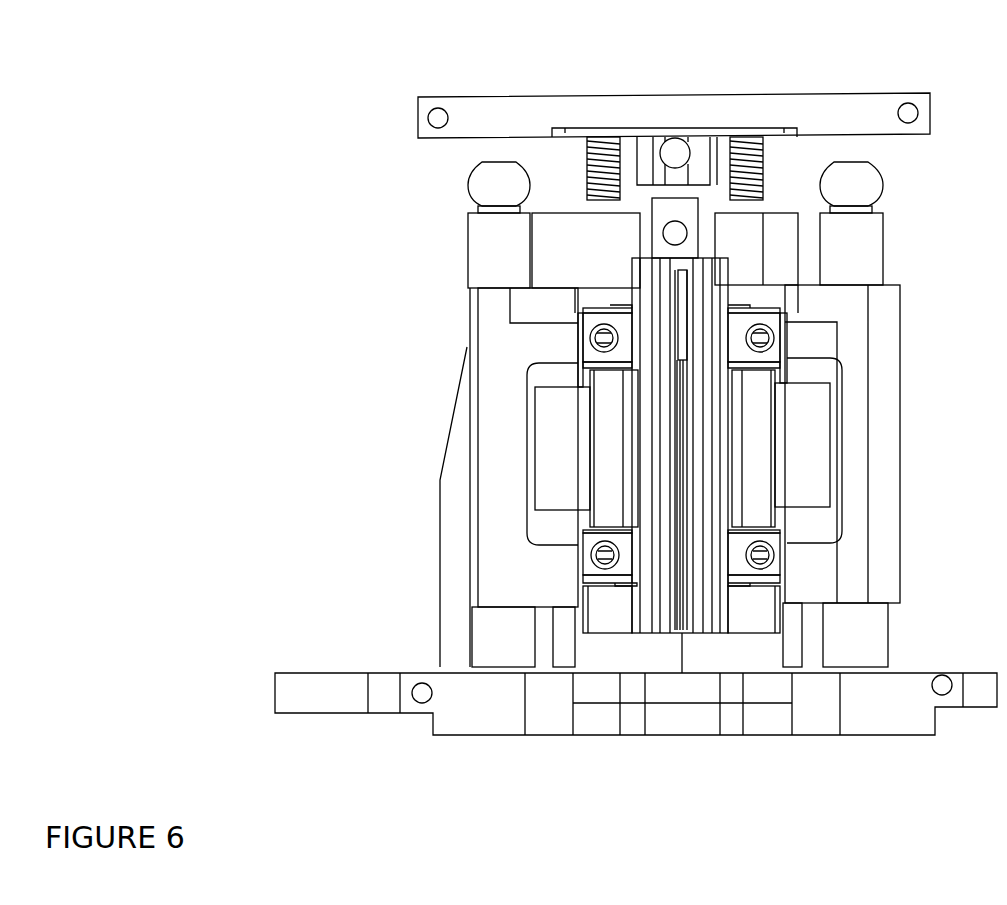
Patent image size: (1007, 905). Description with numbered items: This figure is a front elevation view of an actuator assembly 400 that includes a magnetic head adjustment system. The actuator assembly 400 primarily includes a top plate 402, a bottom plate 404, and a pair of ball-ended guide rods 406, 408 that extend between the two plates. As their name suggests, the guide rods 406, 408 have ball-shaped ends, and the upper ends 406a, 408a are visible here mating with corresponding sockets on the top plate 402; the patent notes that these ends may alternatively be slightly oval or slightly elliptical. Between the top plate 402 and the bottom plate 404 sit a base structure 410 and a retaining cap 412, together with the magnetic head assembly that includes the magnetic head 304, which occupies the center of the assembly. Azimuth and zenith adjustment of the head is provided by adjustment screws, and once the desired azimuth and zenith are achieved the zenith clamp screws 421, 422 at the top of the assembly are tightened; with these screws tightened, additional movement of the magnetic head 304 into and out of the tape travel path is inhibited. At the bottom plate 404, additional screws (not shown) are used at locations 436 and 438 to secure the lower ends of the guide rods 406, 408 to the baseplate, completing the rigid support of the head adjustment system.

The actuator assembly 400 is at (190, 168).
The top plate 402 is at (674, 115).
The bottom plate 404 is at (636, 749).
The ball-ended guide rod 406 is at (501, 440).
The ball-shaped end 406a is at (499, 187).
The ball-ended guide rod 408 is at (854, 440).
The ball-shaped end 408a is at (851, 187).
The base structure 410 is at (670, 476).
The retaining cap 412 is at (665, 263).
The zenith clamp screw 421 is at (604, 125).
The zenith clamp screw 422 is at (743, 125).
The magnetic head 304 is at (712, 435).
The screw location 436 is at (410, 712).
The screw location 438 is at (947, 708).